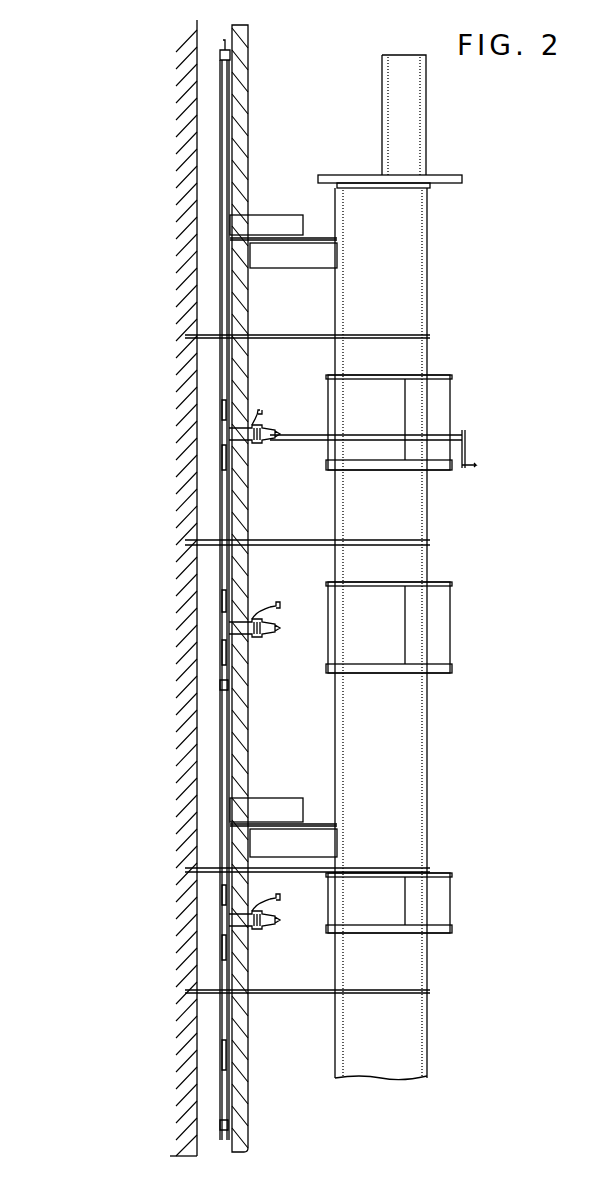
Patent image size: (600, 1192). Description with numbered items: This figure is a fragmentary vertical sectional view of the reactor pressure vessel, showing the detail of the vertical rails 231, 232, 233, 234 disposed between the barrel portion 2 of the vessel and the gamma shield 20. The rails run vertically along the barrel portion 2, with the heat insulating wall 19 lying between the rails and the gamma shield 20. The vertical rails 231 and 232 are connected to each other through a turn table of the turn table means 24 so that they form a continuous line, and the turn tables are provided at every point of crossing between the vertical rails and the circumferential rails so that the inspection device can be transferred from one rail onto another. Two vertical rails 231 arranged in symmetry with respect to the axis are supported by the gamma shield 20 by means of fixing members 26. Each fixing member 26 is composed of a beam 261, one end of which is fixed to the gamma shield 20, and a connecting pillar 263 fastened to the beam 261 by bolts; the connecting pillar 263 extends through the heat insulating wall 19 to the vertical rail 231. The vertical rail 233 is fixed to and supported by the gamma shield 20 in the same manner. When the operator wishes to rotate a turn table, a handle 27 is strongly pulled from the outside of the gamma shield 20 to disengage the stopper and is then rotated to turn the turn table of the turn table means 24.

The barrel portion 2 is at (183, 305).
The heat insulating wall 19 is at (246, 143).
The gamma shield 20 is at (427, 310).
The turn table means 24 is at (225, 433).
The fixing member 26 is at (283, 257).
The handle 27 is at (443, 437).
The vertical rail 231 is at (222, 197).
The vertical rail 232 is at (222, 505).
The vertical rail 233 is at (222, 752).
The vertical rail 234 is at (222, 973).
The beam 261 is at (290, 268).
The connecting pillar 263 is at (272, 215).